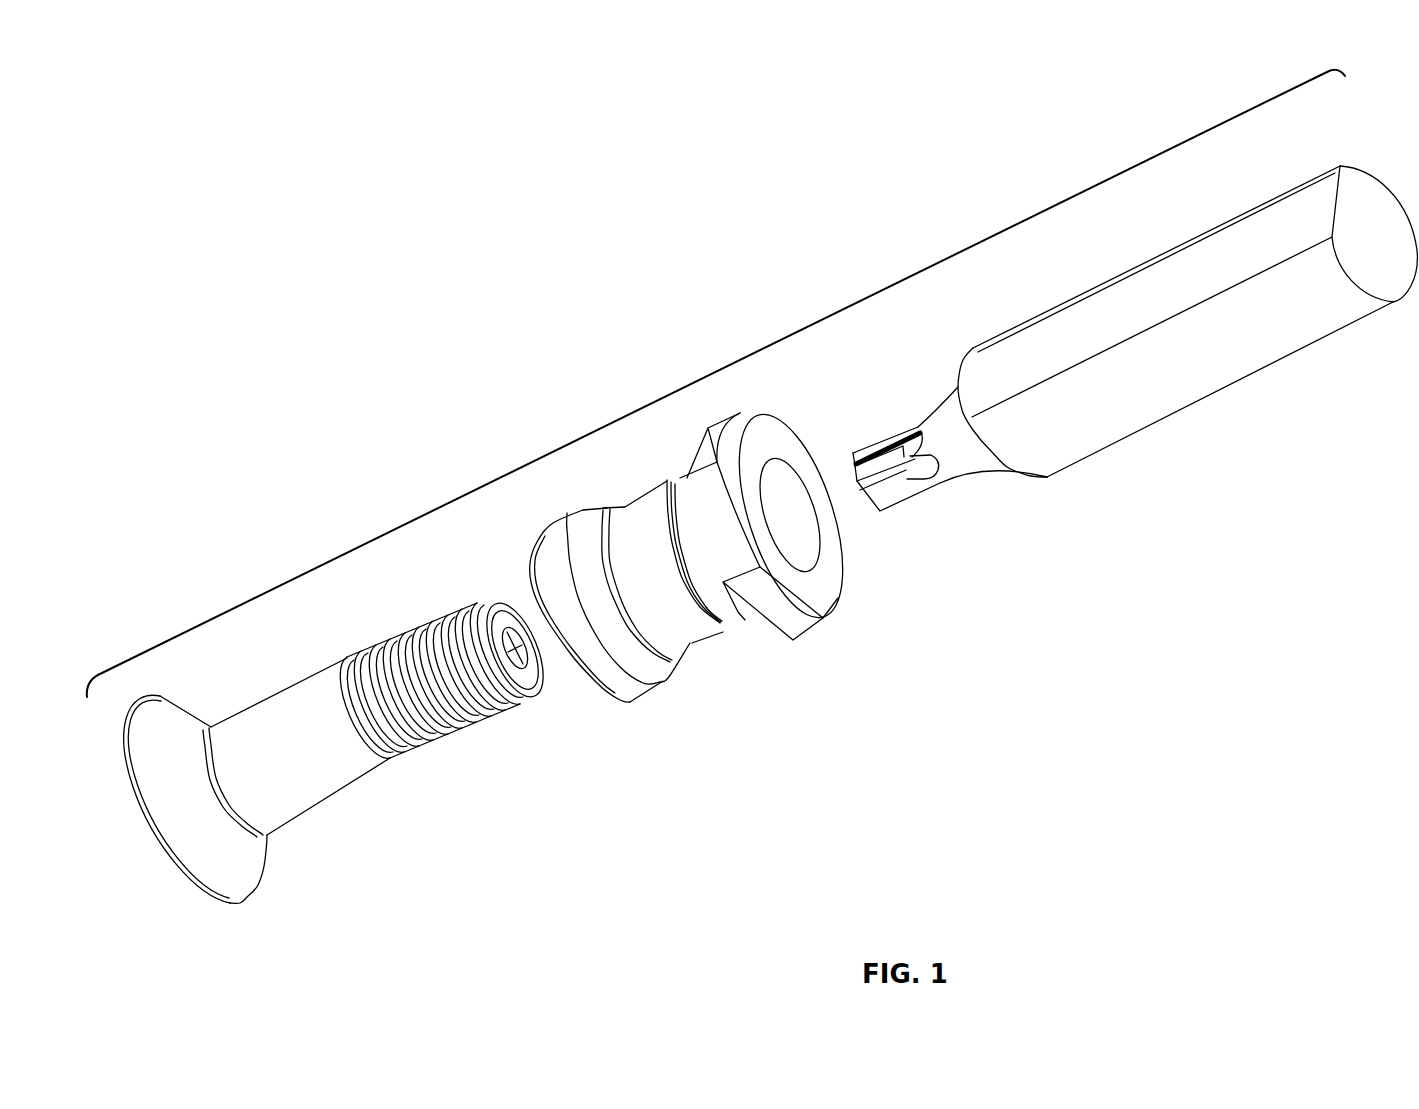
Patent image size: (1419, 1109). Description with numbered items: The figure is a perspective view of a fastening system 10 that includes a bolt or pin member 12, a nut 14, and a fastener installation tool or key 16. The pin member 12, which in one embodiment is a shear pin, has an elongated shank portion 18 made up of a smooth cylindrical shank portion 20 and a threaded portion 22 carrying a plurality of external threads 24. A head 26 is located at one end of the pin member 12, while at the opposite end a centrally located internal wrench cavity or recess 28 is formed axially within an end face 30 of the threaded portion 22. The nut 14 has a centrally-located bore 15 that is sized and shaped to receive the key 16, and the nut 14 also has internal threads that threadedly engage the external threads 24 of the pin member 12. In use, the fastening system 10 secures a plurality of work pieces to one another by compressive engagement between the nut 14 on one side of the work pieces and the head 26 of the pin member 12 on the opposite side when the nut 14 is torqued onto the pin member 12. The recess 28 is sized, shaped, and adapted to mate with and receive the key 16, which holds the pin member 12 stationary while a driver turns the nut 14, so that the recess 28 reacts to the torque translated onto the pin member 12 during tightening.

The fastening system 10 is at (720, 378).
The pin member 12 is at (345, 733).
The nut 14 is at (670, 548).
The bore 15 is at (785, 487).
The key 16 is at (1126, 438).
The shank portion 18 is at (296, 760).
The smooth cylindrical shank portion 20 is at (285, 793).
The threaded portion 22 is at (431, 685).
The external threads 24 is at (430, 620).
The head 26 is at (163, 800).
The recess 28 is at (548, 598).
The end face 30 is at (523, 672).